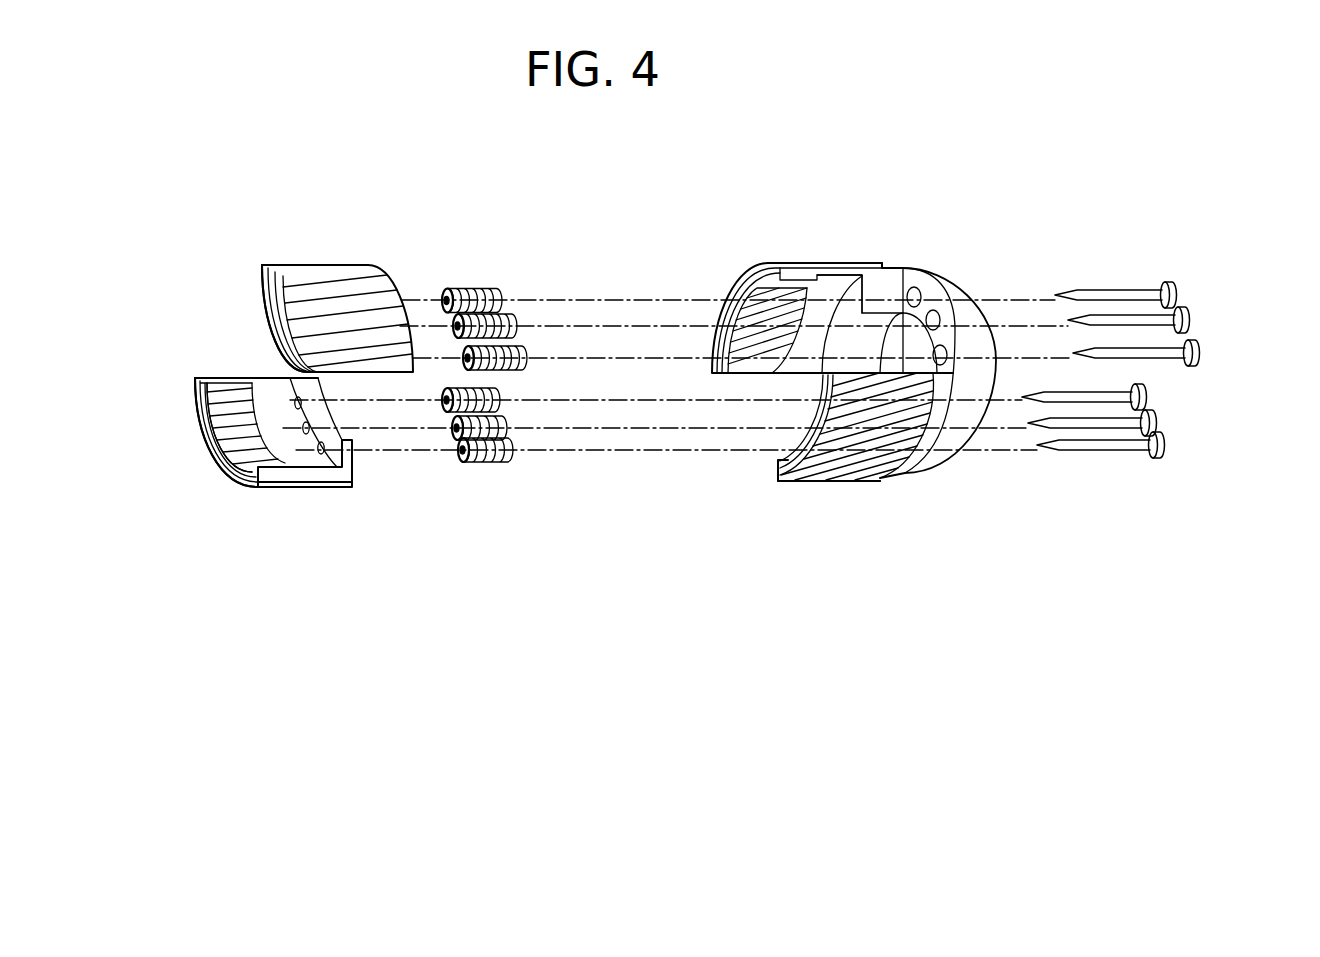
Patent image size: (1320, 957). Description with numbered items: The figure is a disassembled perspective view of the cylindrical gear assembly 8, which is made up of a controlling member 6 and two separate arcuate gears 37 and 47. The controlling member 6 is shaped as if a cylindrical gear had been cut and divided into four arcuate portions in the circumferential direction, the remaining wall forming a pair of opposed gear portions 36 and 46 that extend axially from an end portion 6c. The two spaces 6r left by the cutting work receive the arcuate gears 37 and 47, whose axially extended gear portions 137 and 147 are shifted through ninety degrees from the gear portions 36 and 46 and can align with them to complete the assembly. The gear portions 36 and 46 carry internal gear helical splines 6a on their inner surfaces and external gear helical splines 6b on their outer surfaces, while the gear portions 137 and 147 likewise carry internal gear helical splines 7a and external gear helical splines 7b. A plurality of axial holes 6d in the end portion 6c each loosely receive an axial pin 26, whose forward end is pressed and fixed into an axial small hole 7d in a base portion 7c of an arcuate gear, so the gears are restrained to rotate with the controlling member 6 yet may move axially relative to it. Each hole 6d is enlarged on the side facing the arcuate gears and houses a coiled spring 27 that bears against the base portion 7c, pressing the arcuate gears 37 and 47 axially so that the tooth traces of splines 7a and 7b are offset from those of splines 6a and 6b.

The controlling member 6 is at (829, 362).
The internal gear helical splines 6a is at (788, 283).
The external gear helical splines 6b is at (745, 265).
The end portion 6c is at (928, 462).
The axial holes 6d is at (918, 290).
The spaces 6r is at (808, 273).
The internal gear helical splines 7a is at (280, 314).
The external gear helical splines 7b is at (318, 283).
The base portions 7c is at (355, 475).
The axial small holes 7d is at (294, 403).
The cylindrical gear assembly 8 is at (1000, 280).
The axial pin 26 is at (1088, 288).
The coiled spring 27 is at (442, 288).
The gear portion 36 is at (737, 290).
The arcuate gear 37 is at (304, 290).
The gear portion 46 is at (792, 483).
The arcuate gear 47 is at (274, 464).
The gear portion 137 is at (265, 280).
The gear portion 147 is at (218, 448).